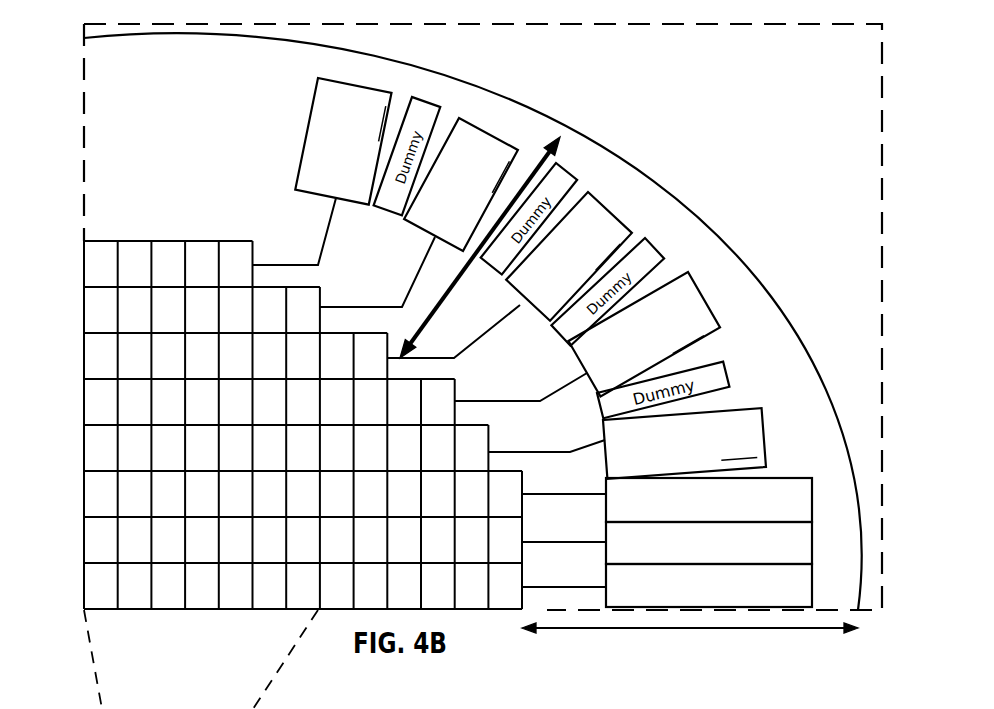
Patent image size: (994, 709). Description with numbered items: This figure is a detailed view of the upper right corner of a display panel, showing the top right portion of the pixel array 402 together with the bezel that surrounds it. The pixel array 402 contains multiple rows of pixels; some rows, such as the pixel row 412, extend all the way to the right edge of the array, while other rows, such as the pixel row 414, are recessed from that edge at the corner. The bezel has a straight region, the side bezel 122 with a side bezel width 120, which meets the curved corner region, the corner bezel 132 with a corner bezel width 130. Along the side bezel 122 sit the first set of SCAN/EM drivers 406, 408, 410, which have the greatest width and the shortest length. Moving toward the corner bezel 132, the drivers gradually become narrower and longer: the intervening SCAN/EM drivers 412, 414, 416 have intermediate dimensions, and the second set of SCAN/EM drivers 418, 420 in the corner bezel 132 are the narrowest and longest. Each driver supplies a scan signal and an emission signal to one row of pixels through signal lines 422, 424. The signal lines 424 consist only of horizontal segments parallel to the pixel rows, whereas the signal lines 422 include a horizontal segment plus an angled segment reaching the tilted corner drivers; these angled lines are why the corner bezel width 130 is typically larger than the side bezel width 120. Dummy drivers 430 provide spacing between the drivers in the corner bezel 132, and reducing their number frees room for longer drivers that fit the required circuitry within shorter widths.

The side bezel width 120 is at (826, 640).
The side bezel 122 is at (826, 500).
The corner bezel width 130 is at (540, 160).
The corner bezel 132 is at (626, 196).
The pixel array 402 is at (70, 240).
The SCAN/EM driver 406 is at (775, 597).
The SCAN/EM driver 408 is at (775, 554).
The SCAN/EM driver 410 is at (775, 511).
The SCAN/EM driver 412 is at (102, 548).
The SCAN/EM driver 414 is at (102, 363).
The SCAN/EM driver 416 is at (569, 256).
The SCAN/EM driver 418 is at (461, 184).
The SCAN/EM driver 420 is at (343, 141).
The signal line 422 is at (318, 258).
The signal line 424 is at (575, 540).
The dummy driver 430 is at (520, 305).